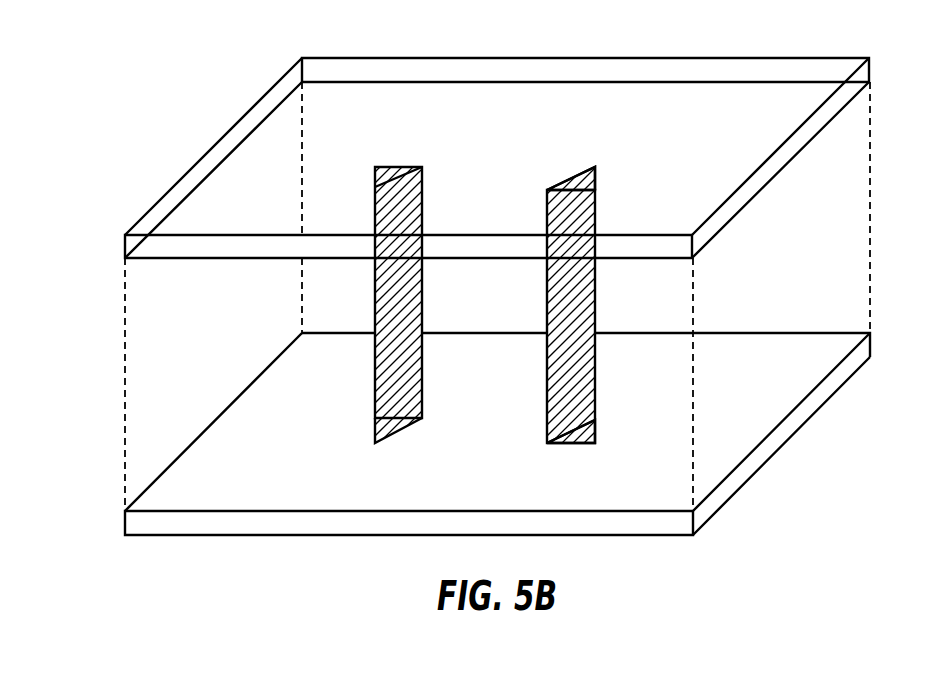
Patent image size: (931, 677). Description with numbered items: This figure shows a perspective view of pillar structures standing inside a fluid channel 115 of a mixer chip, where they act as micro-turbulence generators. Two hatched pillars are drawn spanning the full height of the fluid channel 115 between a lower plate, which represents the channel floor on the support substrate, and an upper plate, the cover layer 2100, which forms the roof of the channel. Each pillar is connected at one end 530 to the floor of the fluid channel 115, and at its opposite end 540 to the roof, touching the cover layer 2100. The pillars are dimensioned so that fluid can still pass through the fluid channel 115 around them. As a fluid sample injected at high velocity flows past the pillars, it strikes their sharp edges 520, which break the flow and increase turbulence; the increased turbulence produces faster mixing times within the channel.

The cover layer 2100 is at (708, 57).
The fluid channel 115 is at (145, 405).
The sharp edge 520 is at (538, 360).
The opposite end of the pillar structure 540 is at (597, 172).
The one end of the pillar structure 530 is at (597, 432).